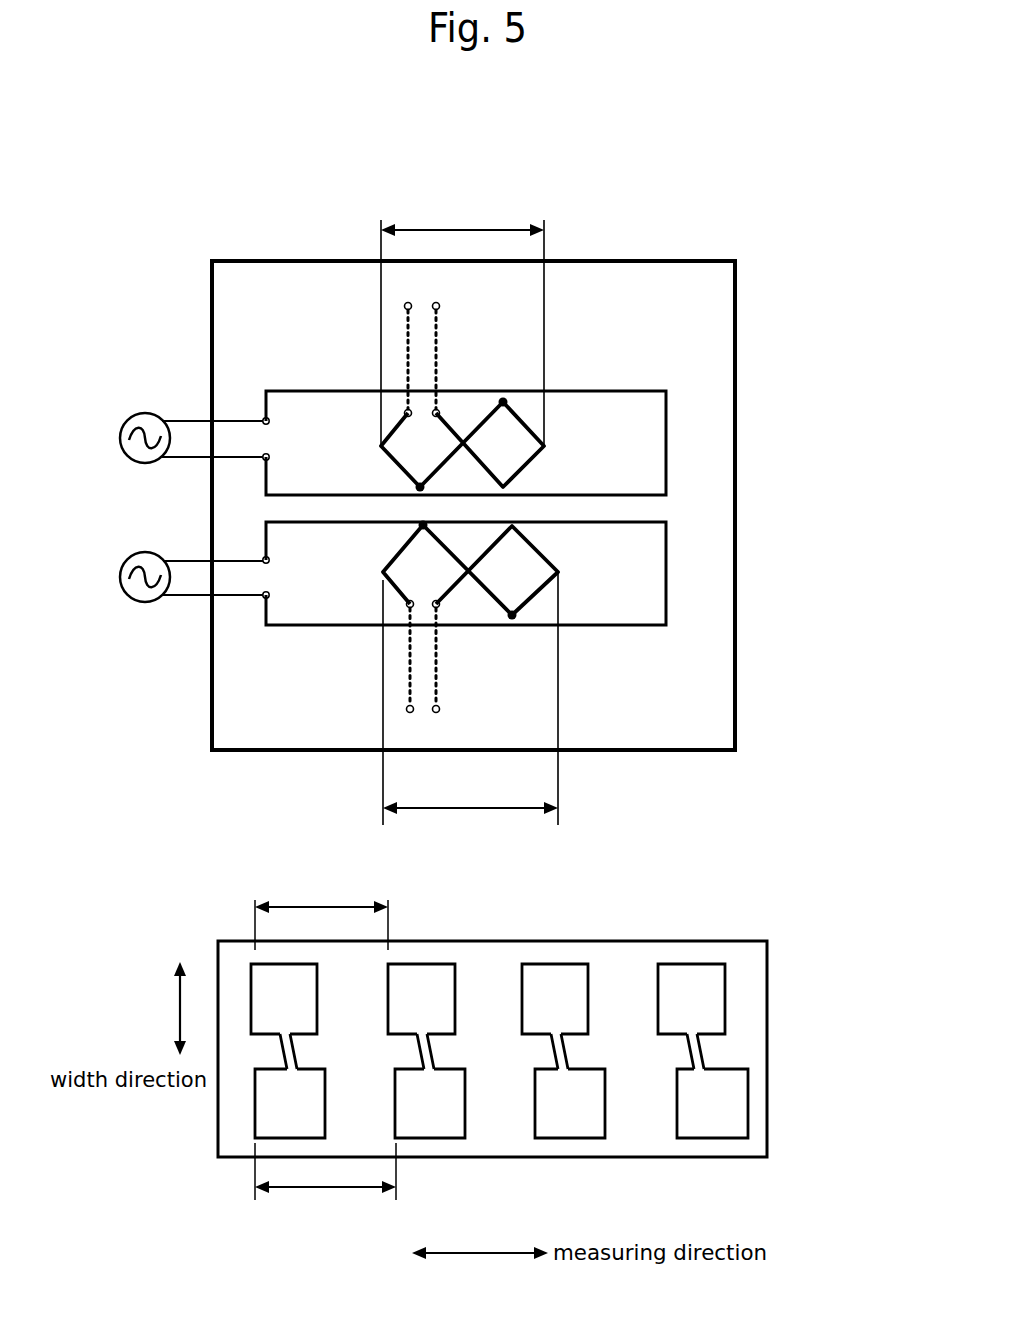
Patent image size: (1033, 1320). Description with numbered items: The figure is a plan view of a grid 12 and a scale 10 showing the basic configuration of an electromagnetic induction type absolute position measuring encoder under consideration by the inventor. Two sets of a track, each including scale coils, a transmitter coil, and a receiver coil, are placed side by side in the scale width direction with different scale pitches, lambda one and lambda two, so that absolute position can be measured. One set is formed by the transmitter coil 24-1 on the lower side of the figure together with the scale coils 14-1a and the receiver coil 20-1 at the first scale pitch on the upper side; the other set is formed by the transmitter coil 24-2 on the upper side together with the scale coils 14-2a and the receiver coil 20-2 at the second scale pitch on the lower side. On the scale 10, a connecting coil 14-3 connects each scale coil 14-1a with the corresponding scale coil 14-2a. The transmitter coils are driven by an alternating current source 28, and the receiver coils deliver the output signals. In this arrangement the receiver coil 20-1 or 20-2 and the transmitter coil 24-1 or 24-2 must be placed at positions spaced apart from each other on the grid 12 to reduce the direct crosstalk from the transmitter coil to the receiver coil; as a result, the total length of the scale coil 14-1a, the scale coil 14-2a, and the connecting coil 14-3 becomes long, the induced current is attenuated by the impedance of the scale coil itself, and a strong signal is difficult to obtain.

The grid 12 is at (735, 302).
The AC power source 28 is at (132, 552).
The transmitter coil 24-2 is at (666, 463).
The transmitter coil 24-1 is at (666, 594).
The receiver coil 20-1 is at (407, 420).
The receiver coil 20-2 is at (390, 592).
The scale 10 is at (767, 952).
The scale coil 14-1a is at (552, 964).
The scale coil 14-2a is at (555, 1138).
The connecting coil 14-3 is at (713, 1052).